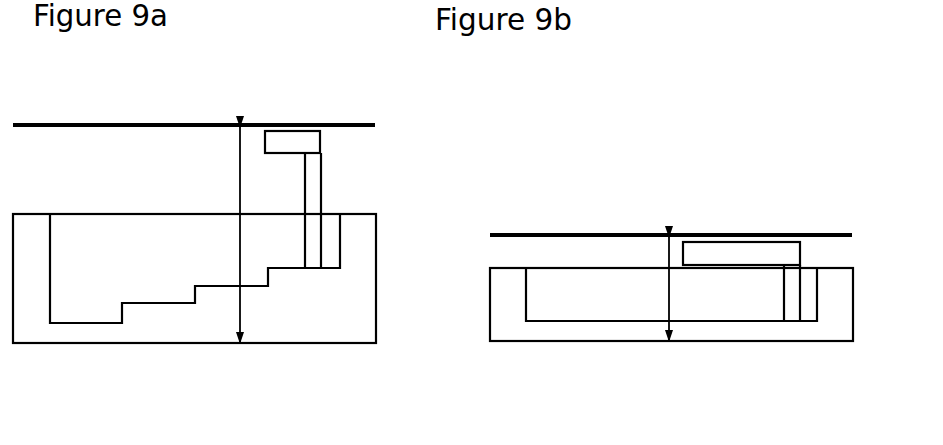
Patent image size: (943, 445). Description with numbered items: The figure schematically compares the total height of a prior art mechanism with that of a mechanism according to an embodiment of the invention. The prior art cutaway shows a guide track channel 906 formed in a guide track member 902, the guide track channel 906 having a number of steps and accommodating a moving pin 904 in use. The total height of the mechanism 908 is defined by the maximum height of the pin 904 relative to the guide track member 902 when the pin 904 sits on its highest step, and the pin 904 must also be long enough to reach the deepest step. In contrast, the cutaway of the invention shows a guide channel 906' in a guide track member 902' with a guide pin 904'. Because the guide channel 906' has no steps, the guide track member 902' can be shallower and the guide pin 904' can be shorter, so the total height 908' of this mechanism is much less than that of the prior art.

In FIG. 9a, the guide track member 902 is at (230, 315).
In FIG. 9a, the moving pin 904 is at (273, 153).
In FIG. 9a, the guide track channel 906 is at (195, 323).
In FIG. 9a, the total height of the mechanism 908 is at (150, 206).
In FIG. 9b, the guide track member 902' is at (671, 351).
In FIG. 9b, the guide pin 904' is at (741, 225).
In FIG. 9b, the guide channel 906' is at (671, 344).
In FIG. 9b, the distance / height dimension (low-profile variant) 908' is at (622, 251).